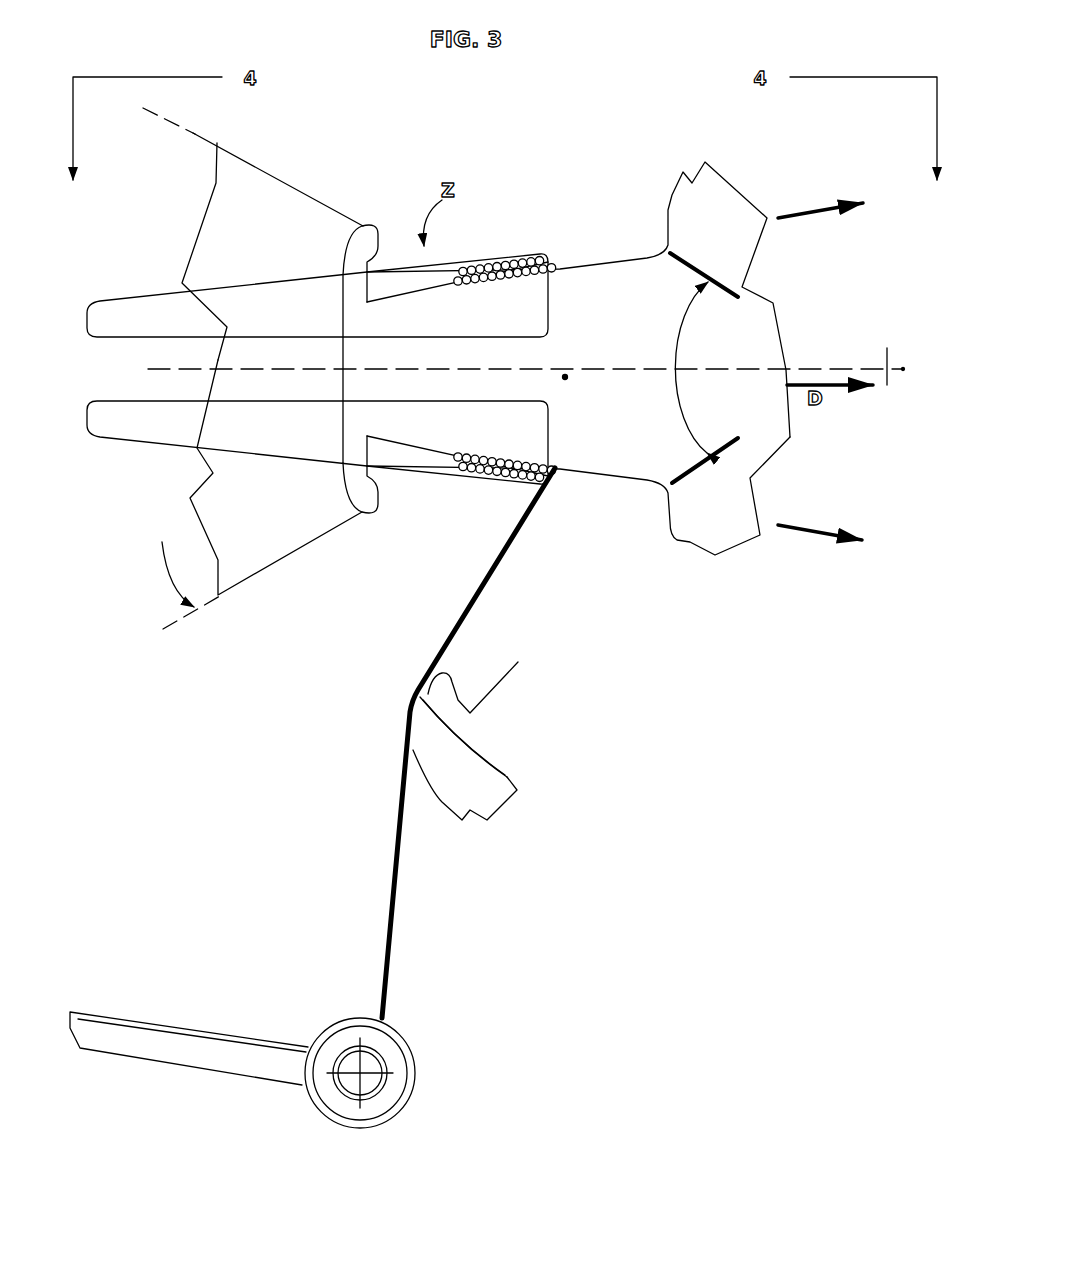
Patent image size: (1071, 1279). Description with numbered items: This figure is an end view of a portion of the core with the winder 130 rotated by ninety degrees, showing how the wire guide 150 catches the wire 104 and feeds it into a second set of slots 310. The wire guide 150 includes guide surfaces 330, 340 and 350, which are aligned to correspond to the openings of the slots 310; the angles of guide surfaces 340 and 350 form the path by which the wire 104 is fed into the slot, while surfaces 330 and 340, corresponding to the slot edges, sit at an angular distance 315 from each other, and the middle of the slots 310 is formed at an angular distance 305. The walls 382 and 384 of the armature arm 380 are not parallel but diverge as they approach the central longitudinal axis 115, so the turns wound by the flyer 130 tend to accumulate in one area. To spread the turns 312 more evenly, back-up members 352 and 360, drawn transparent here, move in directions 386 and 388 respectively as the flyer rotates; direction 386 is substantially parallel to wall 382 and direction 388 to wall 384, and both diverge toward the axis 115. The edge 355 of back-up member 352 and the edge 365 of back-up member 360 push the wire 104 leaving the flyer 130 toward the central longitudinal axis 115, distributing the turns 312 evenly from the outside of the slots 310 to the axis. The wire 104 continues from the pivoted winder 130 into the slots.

The wire 104 is at (390, 940).
The central longitudinal axis 115 is at (882, 366).
The winder (flyer) 130 is at (242, 1077).
The wire guide 150 is at (168, 647).
The angular distance 305 is at (680, 408).
The slots 310 is at (392, 170).
The turns 312 is at (516, 283).
The angular distance 315 is at (185, 139).
The guide surface 330 is at (270, 168).
The guide surface 340 is at (252, 574).
The guide surface 350 is at (442, 807).
The back-up member 352 is at (497, 249).
The edge 355 is at (542, 246).
The back-up member 360 is at (452, 482).
The edge 365 is at (533, 490).
The armature arm 380 is at (565, 380).
The wall 382 is at (625, 257).
The wall 384 is at (632, 478).
The direction 386 is at (818, 207).
The direction 388 is at (820, 533).